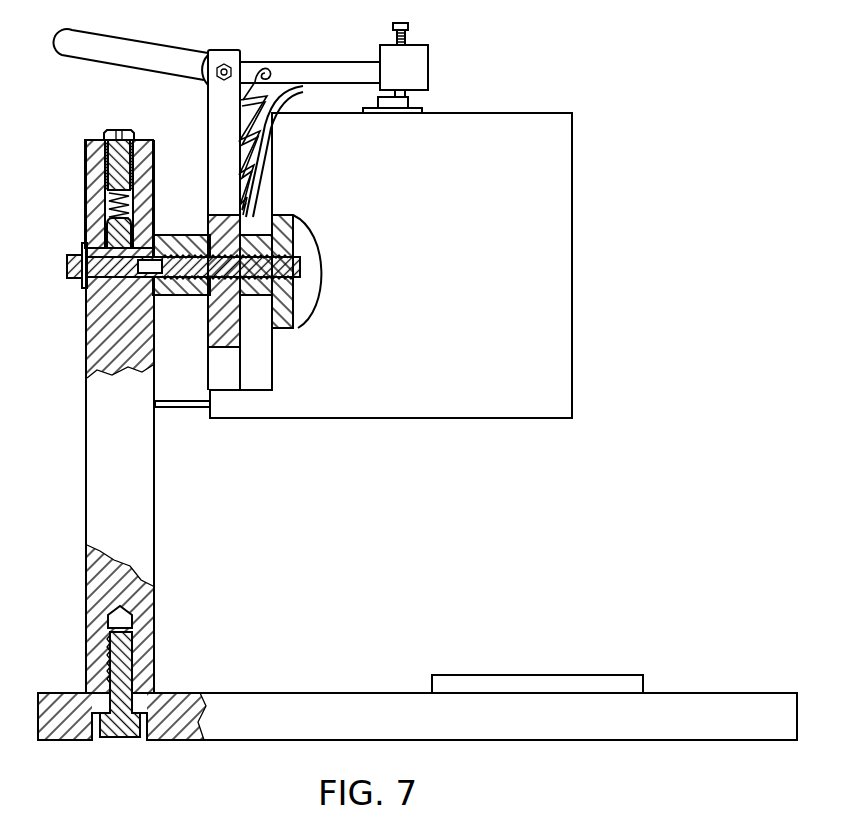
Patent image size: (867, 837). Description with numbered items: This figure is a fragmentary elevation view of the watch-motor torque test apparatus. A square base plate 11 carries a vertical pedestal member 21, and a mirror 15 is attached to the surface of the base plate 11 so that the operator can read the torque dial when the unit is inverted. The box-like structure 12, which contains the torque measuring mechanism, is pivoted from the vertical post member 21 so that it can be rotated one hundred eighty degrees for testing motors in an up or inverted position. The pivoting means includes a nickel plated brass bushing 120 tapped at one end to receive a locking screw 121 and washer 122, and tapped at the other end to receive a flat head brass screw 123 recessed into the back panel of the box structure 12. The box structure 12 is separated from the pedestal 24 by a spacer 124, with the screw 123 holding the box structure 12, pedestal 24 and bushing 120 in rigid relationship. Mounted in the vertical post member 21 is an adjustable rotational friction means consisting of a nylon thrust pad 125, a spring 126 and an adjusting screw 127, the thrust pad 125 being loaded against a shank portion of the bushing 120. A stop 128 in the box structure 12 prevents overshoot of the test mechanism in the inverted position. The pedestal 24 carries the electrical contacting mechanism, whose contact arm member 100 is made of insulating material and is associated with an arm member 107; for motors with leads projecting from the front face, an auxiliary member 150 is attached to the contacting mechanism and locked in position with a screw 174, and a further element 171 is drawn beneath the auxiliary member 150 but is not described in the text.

The base plate 11 is at (726, 692).
The box-like structure 12 is at (574, 244).
The mirror 15 is at (438, 673).
The vertical pedestal member 21 is at (86, 521).
The pedestal 24 is at (206, 113).
The contact arm member 100 is at (278, 62).
The arm member 107 is at (128, 40).
The bushing 120 is at (192, 300).
The locking screw 121 is at (66, 280).
The washer 122 is at (82, 248).
The flat head brass screw 123 is at (302, 255).
The spacer 124 is at (262, 222).
The thrust pad 125 is at (86, 202).
The spring 126 is at (106, 238).
The adjusting screw 127 is at (120, 130).
The stop 128 is at (187, 410).
The auxiliary member 150 is at (431, 58).
The pad 171 is at (418, 107).
The screw 174 is at (407, 23).